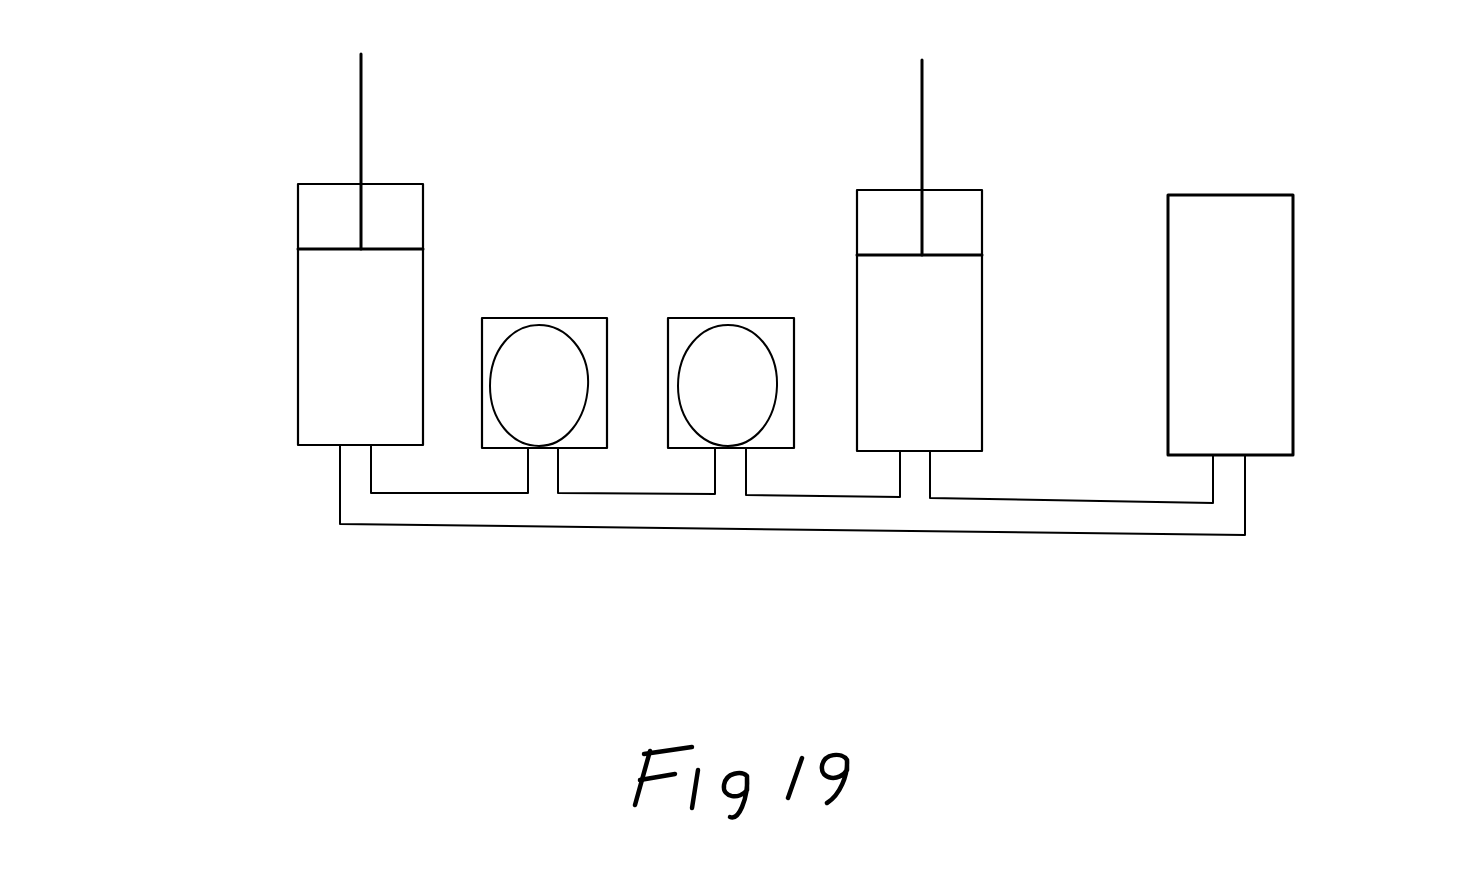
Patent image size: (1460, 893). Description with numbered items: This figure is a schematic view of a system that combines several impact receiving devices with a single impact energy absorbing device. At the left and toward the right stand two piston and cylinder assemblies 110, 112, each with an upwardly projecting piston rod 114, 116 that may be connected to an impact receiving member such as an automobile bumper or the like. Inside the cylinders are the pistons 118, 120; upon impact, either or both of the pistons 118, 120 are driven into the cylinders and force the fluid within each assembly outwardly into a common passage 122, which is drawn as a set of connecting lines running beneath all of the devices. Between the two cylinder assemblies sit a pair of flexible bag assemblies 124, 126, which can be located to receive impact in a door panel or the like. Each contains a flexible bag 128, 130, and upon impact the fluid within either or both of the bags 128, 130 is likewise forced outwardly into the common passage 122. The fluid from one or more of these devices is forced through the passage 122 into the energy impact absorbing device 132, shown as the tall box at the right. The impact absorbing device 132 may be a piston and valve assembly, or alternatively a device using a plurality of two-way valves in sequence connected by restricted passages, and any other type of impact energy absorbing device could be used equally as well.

The piston and cylinder assembly 110 is at (290, 366).
The piston and cylinder assembly 112 is at (983, 306).
The piston rod 114 is at (361, 119).
The piston rod 116 is at (922, 125).
The piston 118 is at (312, 250).
The piston 120 is at (958, 256).
The common passage 122 is at (812, 527).
The flexible bag assembly 124 is at (566, 309).
The flexible bag assembly 126 is at (710, 302).
The bag 128 is at (568, 255).
The bag 130 is at (745, 335).
The impact absorbing device 132 is at (1313, 322).